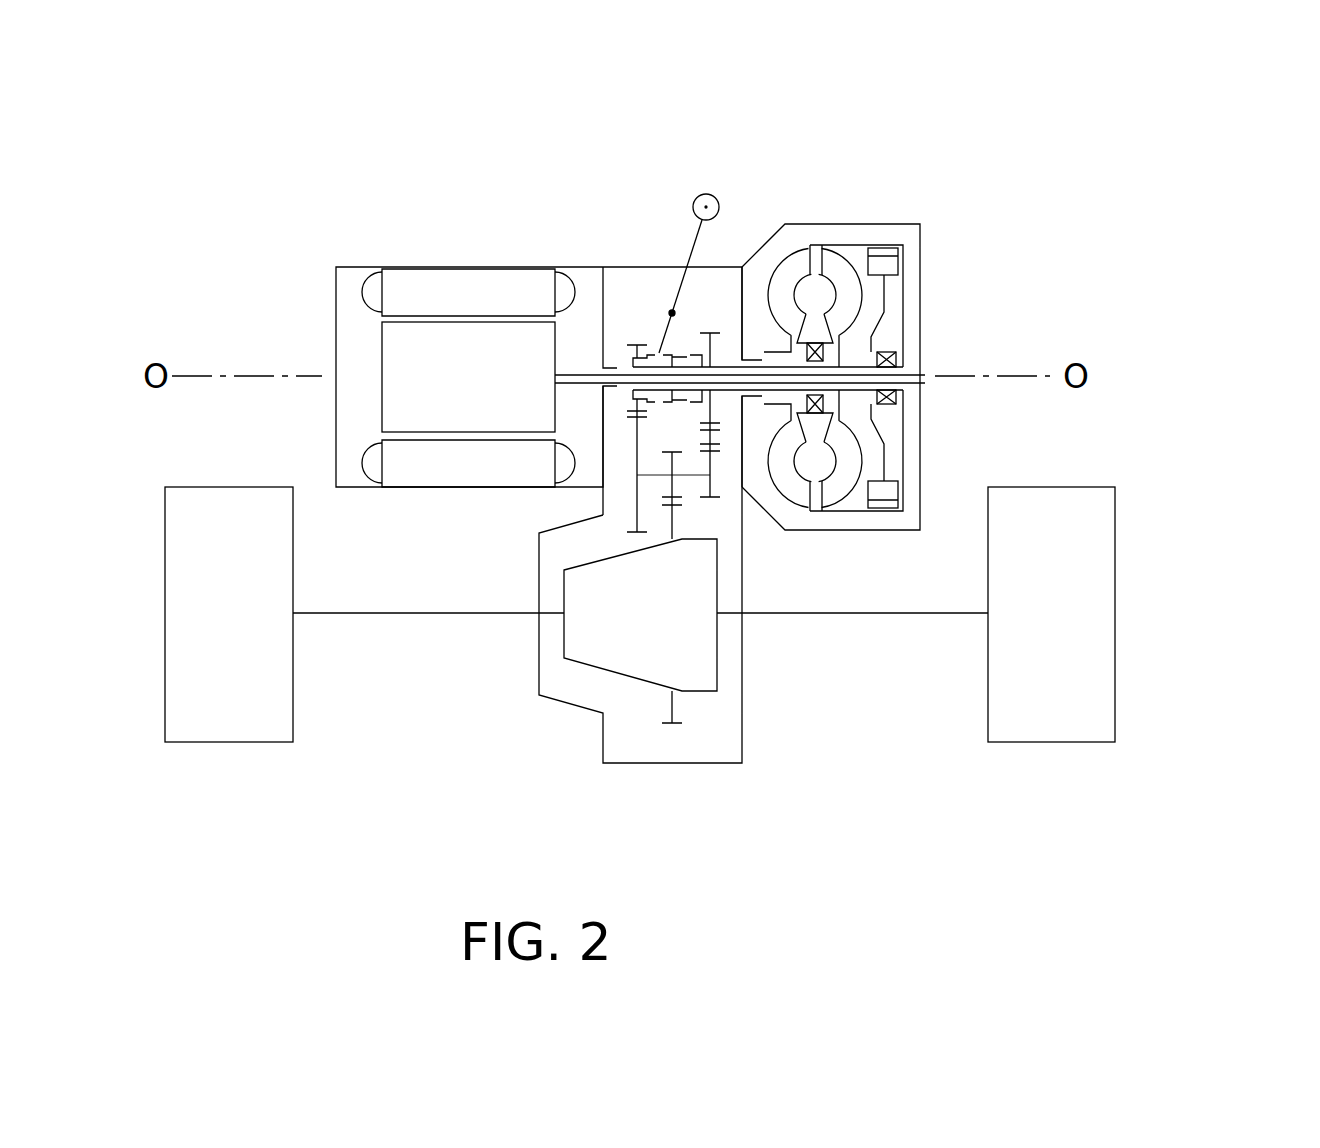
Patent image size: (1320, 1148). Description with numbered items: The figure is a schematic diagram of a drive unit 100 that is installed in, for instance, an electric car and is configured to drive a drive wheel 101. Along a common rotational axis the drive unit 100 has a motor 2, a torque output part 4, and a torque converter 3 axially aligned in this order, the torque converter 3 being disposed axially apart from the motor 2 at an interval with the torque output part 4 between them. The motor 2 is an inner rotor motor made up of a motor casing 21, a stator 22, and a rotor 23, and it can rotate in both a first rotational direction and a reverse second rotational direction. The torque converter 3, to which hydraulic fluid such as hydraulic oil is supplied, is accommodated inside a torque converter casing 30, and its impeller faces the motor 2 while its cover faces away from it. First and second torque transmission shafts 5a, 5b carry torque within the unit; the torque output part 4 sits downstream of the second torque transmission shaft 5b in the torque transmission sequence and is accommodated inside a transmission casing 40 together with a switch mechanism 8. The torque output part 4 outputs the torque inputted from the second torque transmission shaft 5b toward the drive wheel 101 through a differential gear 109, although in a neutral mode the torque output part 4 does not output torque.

The drive unit 100 is at (927, 171).
The drive wheel 101 is at (1115, 523).
The differential gear 109 is at (602, 670).
The motor 2 is at (481, 267).
The motor casing 21 is at (336, 300).
The stator 22 is at (413, 268).
The rotor 23 is at (400, 366).
The torque converter 3 is at (848, 244).
The torque converter casing 30 is at (921, 240).
The torque output part 4 is at (712, 327).
The transmission casing 40 is at (630, 267).
The first torque transmission shaft 5a is at (757, 380).
The second torque transmission shaft 5b is at (832, 385).
The switch mechanism 8 is at (655, 345).